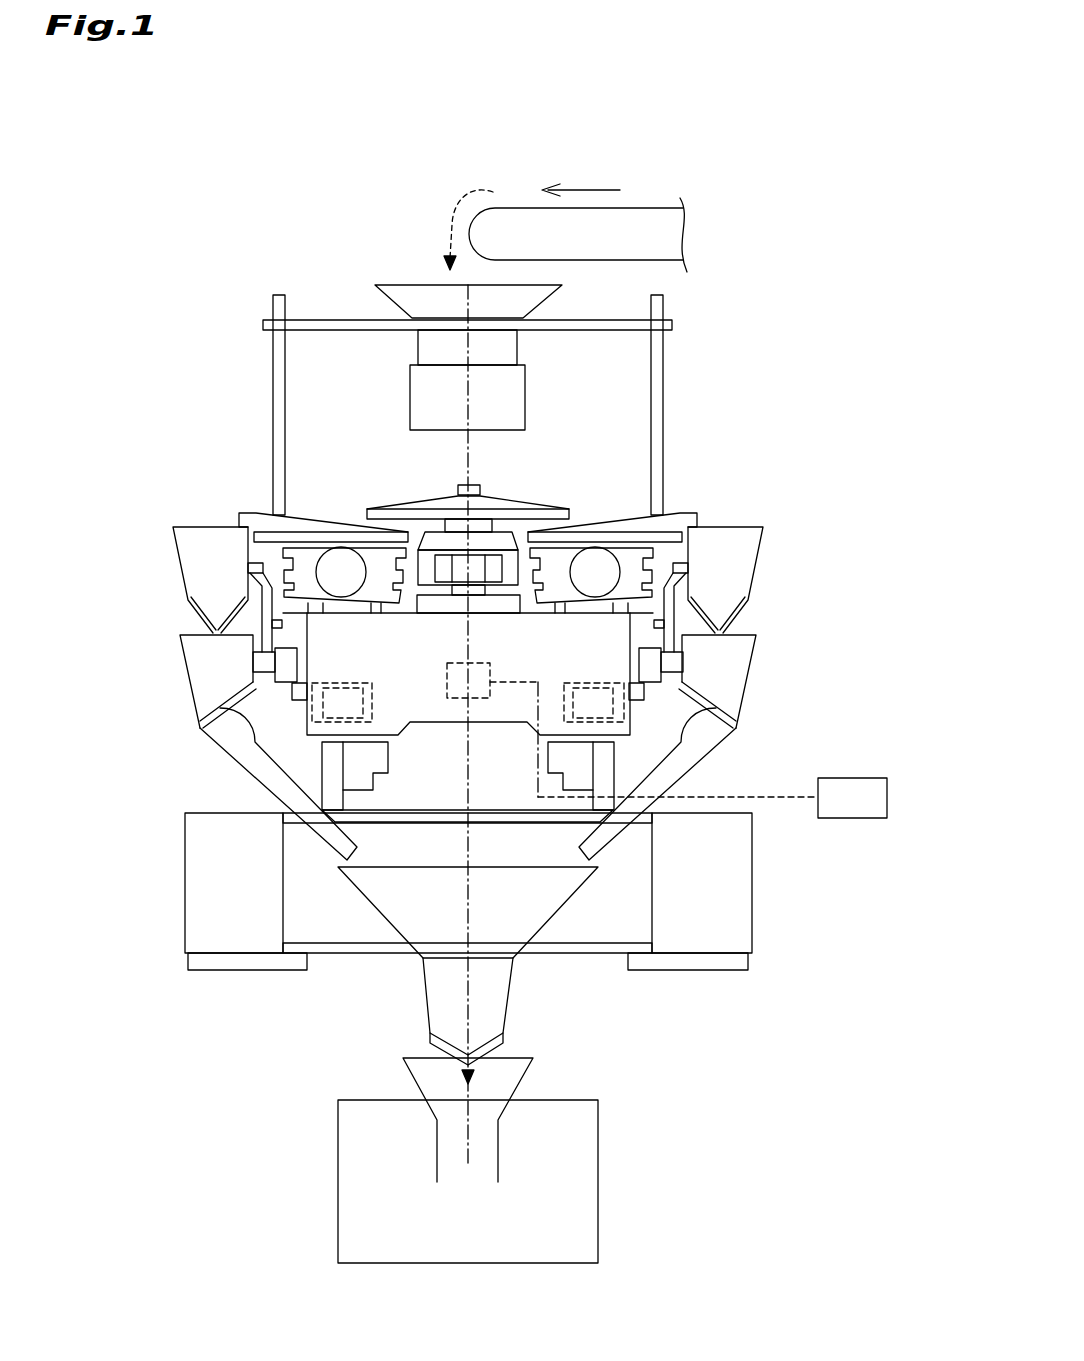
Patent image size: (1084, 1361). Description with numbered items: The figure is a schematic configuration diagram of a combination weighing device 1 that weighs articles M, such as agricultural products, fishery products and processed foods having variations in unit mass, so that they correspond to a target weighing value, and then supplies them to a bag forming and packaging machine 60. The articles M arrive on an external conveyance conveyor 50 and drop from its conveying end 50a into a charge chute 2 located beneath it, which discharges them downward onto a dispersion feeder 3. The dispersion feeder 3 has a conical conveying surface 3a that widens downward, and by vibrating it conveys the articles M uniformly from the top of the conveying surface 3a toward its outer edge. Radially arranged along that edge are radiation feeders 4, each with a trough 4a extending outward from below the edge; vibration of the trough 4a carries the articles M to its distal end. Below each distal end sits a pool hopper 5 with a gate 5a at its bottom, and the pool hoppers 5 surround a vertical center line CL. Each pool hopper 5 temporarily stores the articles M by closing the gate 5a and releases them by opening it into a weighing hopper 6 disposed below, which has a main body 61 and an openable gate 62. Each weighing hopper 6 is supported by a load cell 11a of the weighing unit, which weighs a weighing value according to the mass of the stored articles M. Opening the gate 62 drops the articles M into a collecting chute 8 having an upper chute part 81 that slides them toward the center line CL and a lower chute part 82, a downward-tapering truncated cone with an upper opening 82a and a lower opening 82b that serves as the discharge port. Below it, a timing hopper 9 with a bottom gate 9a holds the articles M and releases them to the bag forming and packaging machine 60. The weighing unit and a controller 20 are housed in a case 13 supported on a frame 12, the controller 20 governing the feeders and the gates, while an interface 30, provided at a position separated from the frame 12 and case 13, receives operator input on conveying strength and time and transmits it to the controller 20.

The combination weighing device 1 is at (209, 183).
The charge chute 2 is at (412, 292).
The dispersion feeder 3 is at (463, 529).
The conveying surface 3a is at (397, 502).
The radiation feeders 4 is at (469, 519).
The trough 4a is at (295, 516).
The pool hoppers 5 is at (468, 580).
The gate 5a is at (203, 620).
The weighing hoppers 6 is at (468, 645).
The hopper body 61 is at (197, 675).
The weighing hopper gate 62 is at (215, 702).
The collecting chute 8 is at (475, 886).
The upper chute part 81 is at (250, 769).
The lower chute part 82 is at (487, 945).
The upper opening 82a is at (440, 866).
The lower opening 82b is at (453, 962).
The timing hopper 9 is at (493, 1007).
The gate 9a is at (457, 1053).
The load cells 11a is at (412, 652).
The frame 12 is at (742, 868).
The case 13 is at (483, 700).
The controller 20 is at (462, 700).
The interface 30 is at (887, 798).
The conveyance conveyor 50 is at (578, 209).
The conveying end 50a is at (498, 233).
The bag forming and packaging machine 60 is at (583, 1167).
The articles M is at (448, 205).
The center line CL is at (470, 898).